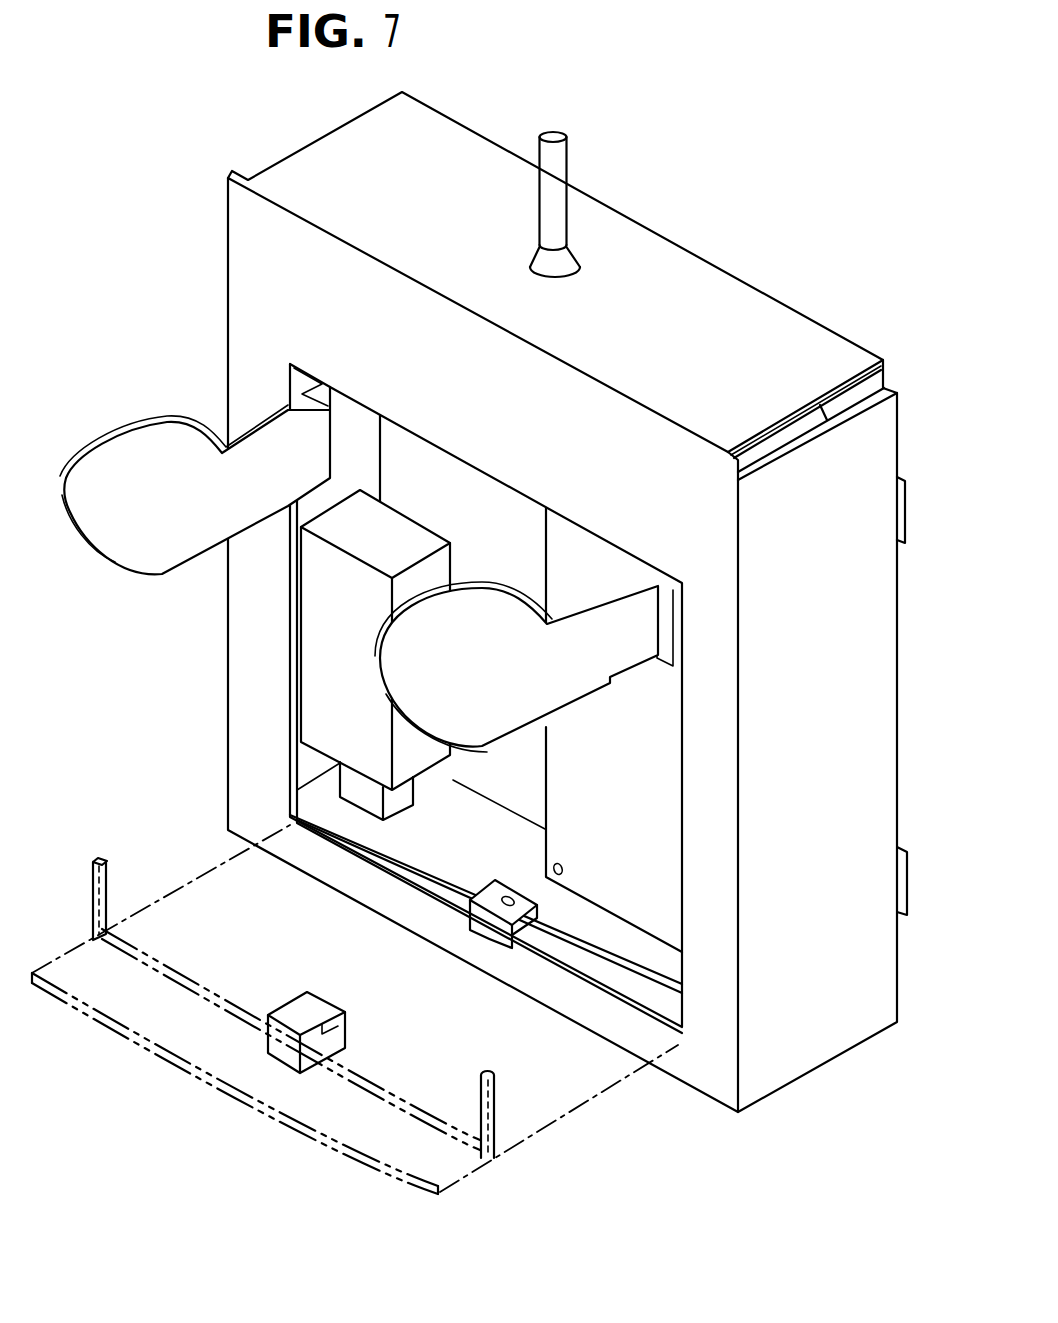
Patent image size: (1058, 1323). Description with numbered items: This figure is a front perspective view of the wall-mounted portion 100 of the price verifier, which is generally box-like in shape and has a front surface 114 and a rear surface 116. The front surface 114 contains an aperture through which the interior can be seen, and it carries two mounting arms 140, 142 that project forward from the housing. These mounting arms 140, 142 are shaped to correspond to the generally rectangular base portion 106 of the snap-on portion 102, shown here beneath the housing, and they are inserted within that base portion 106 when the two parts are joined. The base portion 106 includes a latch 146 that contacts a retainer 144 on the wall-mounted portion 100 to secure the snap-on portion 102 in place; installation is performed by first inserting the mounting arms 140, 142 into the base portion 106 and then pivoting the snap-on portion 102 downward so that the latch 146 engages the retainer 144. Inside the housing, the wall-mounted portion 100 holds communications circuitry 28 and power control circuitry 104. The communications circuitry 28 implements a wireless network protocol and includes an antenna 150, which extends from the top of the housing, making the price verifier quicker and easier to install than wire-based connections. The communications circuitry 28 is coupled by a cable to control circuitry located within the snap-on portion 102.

The wall-mounted portion 100 is at (793, 188).
The snap-on portion 102 is at (470, 1178).
The power control circuitry 104 is at (361, 633).
The base portion 106 is at (495, 1098).
The front surface 114 is at (610, 423).
The rear surface 116 is at (850, 338).
The mounting arm 140 is at (150, 448).
The mounting arm 142 is at (480, 623).
The retainer 144 is at (493, 897).
The latch 146 is at (332, 1010).
The antenna 150 is at (564, 128).
The communications circuitry 28 is at (632, 797).